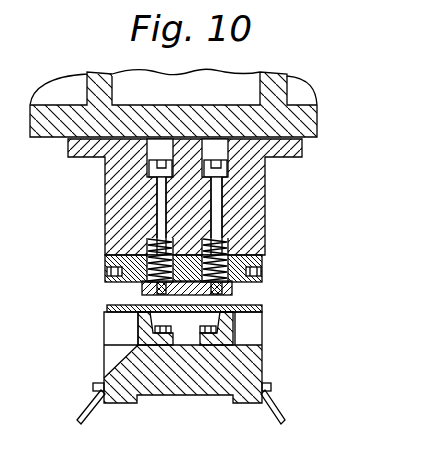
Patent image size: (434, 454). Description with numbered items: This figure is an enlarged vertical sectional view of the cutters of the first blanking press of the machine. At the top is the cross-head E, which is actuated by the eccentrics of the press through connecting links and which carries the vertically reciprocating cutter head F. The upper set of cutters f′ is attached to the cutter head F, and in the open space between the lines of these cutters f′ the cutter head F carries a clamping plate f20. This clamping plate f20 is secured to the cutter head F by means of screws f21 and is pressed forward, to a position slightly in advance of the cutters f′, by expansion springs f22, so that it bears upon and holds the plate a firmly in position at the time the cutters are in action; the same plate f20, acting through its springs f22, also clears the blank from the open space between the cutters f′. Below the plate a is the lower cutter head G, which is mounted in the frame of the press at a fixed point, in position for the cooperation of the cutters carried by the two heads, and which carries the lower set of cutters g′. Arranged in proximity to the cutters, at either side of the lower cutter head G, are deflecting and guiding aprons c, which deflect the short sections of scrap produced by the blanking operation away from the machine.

The cross-head E is at (187, 103).
The cutter head F is at (250, 211).
The screws f21 is at (160, 200).
The expansion springs f22 is at (233, 244).
The upper set of cutters f′ is at (262, 285).
The clamping plate f20 is at (232, 297).
The plate a is at (120, 306).
The lower set of cutters g′ is at (235, 331).
The cutter head G is at (192, 397).
The deflecting and guiding aprons c is at (89, 408).